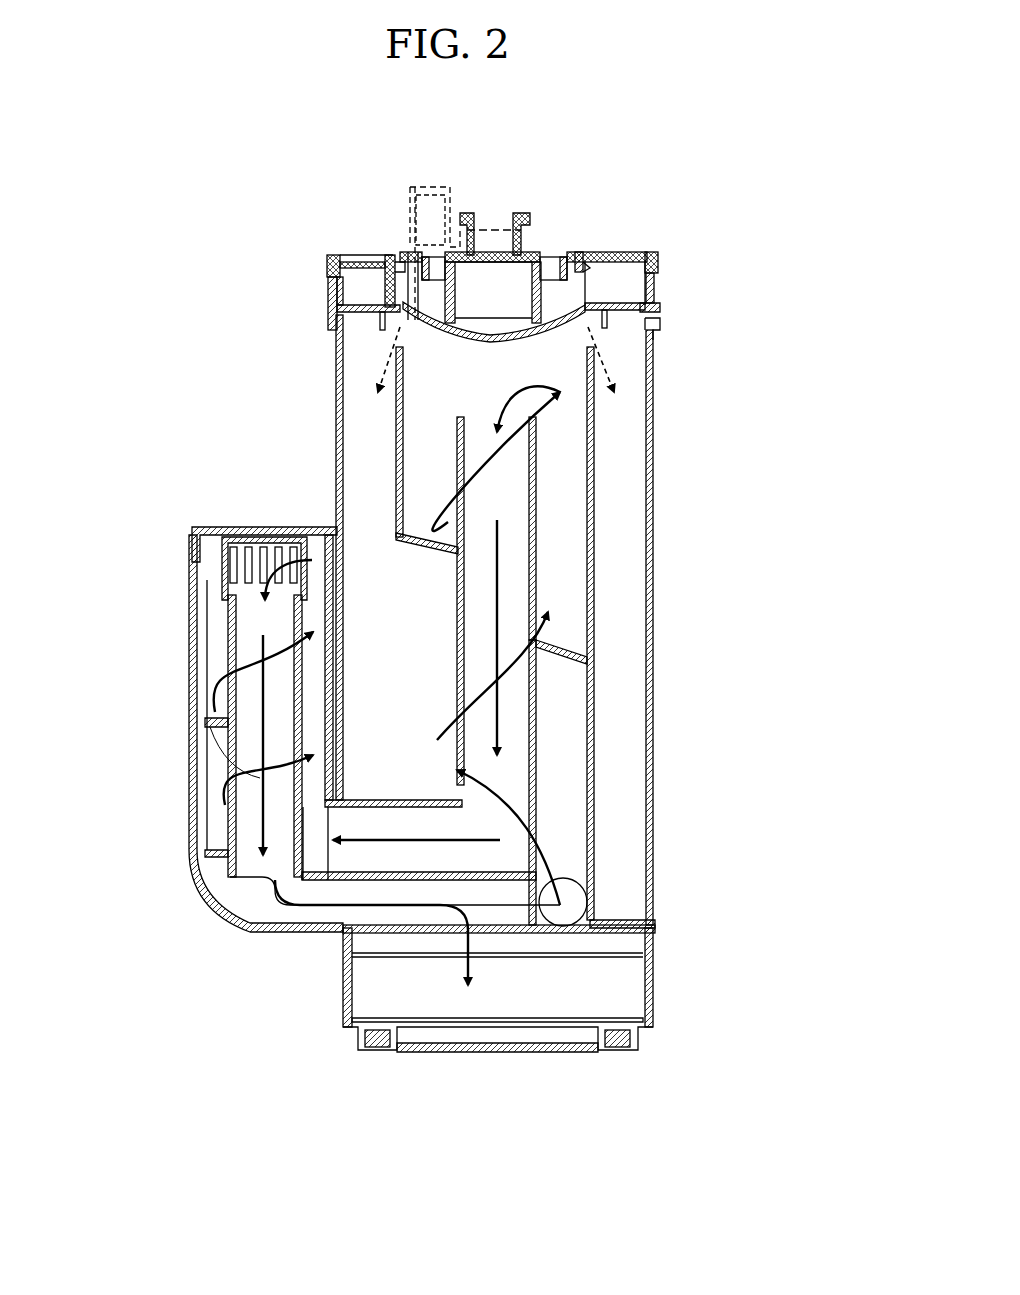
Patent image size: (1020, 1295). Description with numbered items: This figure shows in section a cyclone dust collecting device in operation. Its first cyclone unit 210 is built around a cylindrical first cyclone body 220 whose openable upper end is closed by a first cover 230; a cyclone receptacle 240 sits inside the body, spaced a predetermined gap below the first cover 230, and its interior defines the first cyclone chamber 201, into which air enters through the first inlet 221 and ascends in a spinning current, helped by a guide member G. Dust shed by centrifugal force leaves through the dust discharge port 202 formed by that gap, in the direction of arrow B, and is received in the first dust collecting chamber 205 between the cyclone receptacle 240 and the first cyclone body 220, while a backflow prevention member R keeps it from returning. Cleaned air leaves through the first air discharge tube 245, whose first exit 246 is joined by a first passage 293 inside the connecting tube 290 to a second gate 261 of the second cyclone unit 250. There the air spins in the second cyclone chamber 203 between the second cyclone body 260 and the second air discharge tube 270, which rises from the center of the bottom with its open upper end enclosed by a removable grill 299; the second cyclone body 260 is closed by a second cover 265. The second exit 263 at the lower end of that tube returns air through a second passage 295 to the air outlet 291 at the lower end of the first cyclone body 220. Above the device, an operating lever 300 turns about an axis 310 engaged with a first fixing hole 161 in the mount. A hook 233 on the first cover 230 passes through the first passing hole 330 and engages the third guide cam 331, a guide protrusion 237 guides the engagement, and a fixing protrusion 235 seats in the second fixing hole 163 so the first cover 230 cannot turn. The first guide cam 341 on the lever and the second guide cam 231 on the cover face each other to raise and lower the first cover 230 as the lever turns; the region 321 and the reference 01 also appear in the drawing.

The second fixing hole 163 is at (412, 182).
The fixing protrusion 235 is at (433, 190).
The axis 310 is at (465, 212).
The first fixing hole 161 is at (535, 212).
The first passing hole 330 is at (393, 293).
The guide protrusion 237 is at (555, 255).
The third guide cam 331 is at (590, 252).
The operating lever 300 is at (650, 252).
The cover side wall 321 is at (345, 262).
The hook 233 is at (327, 264).
The first guide cam 341 is at (660, 268).
The second guide cam 231 is at (655, 290).
The first cover 230 is at (660, 318).
The first cyclone unit 210 is at (738, 315).
The first cyclone body 220 is at (655, 355).
The backflow prevention member R is at (338, 340).
The dust discharge port 202 is at (365, 352).
The arrow B is at (563, 547).
The first cyclone chamber 201 is at (345, 400).
The first air discharge tube 245 is at (560, 457).
The first dust collecting chamber 205 is at (398, 430).
The cyclone receptacle 240 is at (593, 480).
The grill 299 is at (262, 527).
The second cover 265 is at (215, 532).
The second cyclone unit 250 is at (186, 562).
The second cyclone body 260 is at (228, 612).
The second cyclone chamber 203 is at (215, 650).
The guide member G is at (600, 640).
The second air discharge tube 270 is at (230, 780).
The first exit 246 is at (640, 840).
The outlet 01 is at (650, 870).
The second gate 261 is at (300, 870).
The first inlet 221 is at (655, 930).
The second exit 263 is at (270, 910).
The first passage 293 is at (345, 935).
The second passage 295 is at (378, 935).
The connecting tube 290 is at (372, 1100).
The air outlet 291 is at (555, 1050).